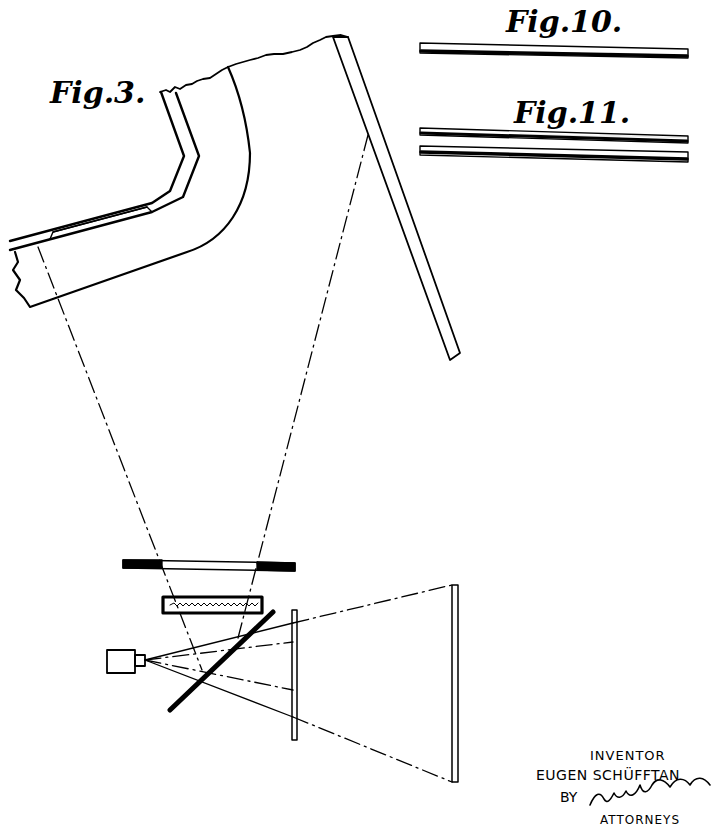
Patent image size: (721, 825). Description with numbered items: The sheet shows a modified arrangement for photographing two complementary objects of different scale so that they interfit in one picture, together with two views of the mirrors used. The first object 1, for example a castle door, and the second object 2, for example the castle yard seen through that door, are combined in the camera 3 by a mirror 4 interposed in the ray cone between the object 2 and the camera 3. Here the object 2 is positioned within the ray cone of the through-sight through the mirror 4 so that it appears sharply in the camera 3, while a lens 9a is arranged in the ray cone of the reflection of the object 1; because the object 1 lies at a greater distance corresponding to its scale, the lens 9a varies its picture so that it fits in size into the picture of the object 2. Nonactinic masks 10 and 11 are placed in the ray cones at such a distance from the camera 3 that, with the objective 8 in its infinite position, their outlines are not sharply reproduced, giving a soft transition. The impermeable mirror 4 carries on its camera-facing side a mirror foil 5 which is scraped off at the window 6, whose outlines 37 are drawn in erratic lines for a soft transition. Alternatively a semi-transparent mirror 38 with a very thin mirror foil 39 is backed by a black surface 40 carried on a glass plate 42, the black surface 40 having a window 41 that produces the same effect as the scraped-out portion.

In FIG. 3, the object 1 is at (131, 187).
In FIG. 3, the object 2 is at (458, 657).
In FIG. 3, the camera 3 is at (121, 661).
In FIG. 3, the mirror 4 is at (186, 705).
In FIG. 10, the mirror 4 is at (438, 46).
In FIG. 10, the mirror foil 5 is at (628, 58).
In FIG. 10, the window 6 is at (562, 57).
In FIG. 3, the objective 8 is at (141, 656).
In FIG. 3, the lens 9a is at (218, 597).
In FIG. 3, the mask 10 is at (297, 683).
In FIG. 3, the mask 11 is at (288, 562).
In FIG. 10, the outlines 37 is at (527, 58).
In FIG. 11, the semi-transparent mirror 38 is at (540, 159).
In FIG. 11, the mirror foil 39 is at (593, 160).
In FIG. 11, the black surface 40 is at (645, 124).
In FIG. 11, the window 41 is at (536, 134).
In FIG. 11, the glass plate 42 is at (485, 124).